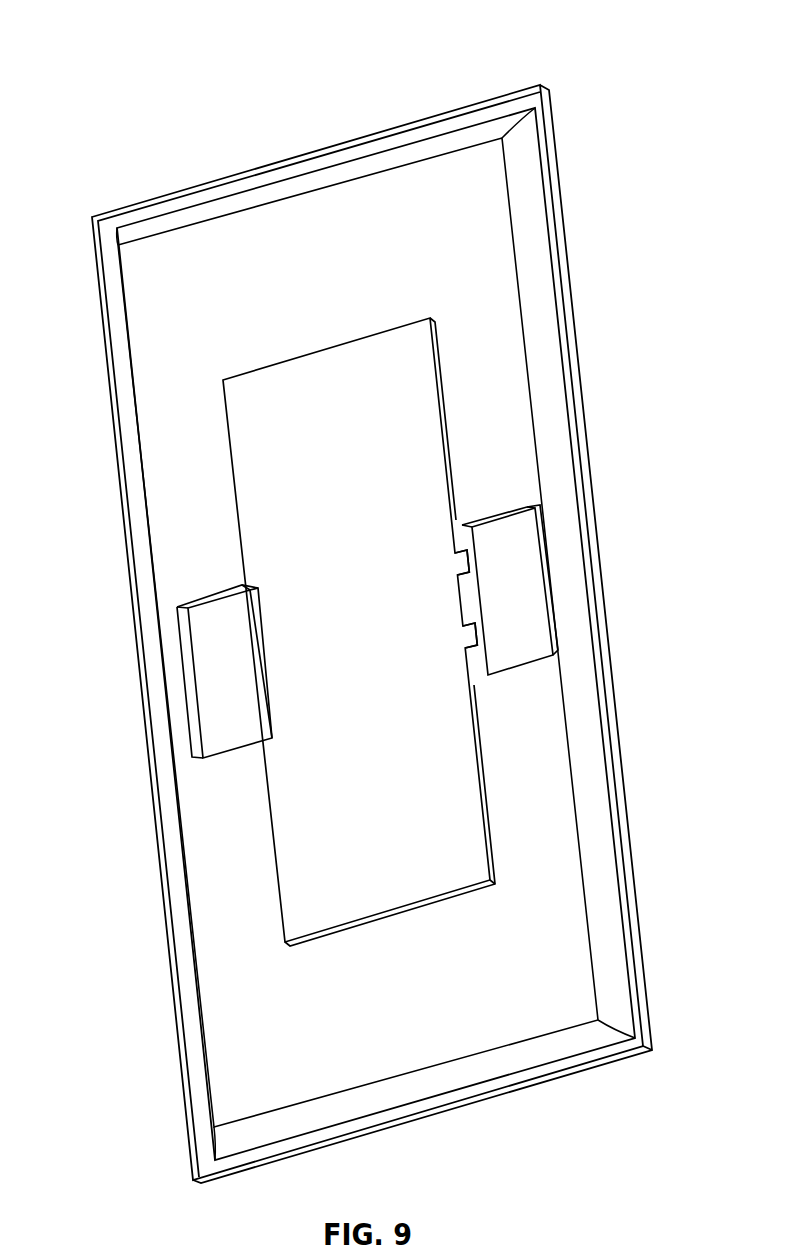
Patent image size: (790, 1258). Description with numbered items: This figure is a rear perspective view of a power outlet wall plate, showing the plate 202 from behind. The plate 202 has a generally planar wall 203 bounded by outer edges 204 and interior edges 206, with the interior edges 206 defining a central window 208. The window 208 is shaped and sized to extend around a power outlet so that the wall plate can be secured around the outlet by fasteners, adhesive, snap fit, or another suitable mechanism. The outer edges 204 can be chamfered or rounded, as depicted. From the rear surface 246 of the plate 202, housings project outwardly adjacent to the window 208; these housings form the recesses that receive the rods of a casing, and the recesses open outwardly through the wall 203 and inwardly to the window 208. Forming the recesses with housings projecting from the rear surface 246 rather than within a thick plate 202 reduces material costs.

The plate 202 is at (630, 58).
The wall 203 is at (415, 180).
The outer edges 204 is at (228, 210).
The interior edges 206 is at (262, 365).
The central window 208 is at (360, 412).
The rear surface 246 is at (205, 865).